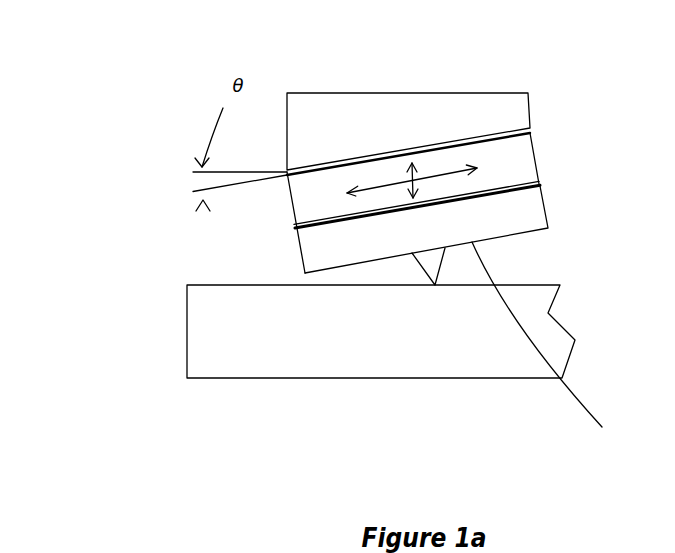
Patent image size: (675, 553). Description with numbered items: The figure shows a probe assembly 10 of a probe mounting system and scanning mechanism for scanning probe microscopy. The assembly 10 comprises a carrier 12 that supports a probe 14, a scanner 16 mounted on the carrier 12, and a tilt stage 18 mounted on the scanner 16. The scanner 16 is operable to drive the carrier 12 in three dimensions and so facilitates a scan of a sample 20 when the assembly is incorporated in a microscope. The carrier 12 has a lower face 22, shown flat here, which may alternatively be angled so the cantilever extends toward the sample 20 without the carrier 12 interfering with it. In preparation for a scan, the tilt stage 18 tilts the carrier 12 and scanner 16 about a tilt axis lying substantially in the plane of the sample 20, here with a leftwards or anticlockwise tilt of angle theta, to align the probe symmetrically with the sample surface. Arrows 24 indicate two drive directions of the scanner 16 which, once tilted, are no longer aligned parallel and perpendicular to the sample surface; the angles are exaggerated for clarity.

The probe assembly 10 is at (161, 54).
The carrier 12 is at (522, 213).
The probe 14 is at (424, 272).
The scanner 16 is at (540, 153).
The tilt stage 18 is at (482, 110).
The sample 20 is at (216, 358).
The lower face 22 is at (550, 342).
The arrows 24 is at (345, 194).